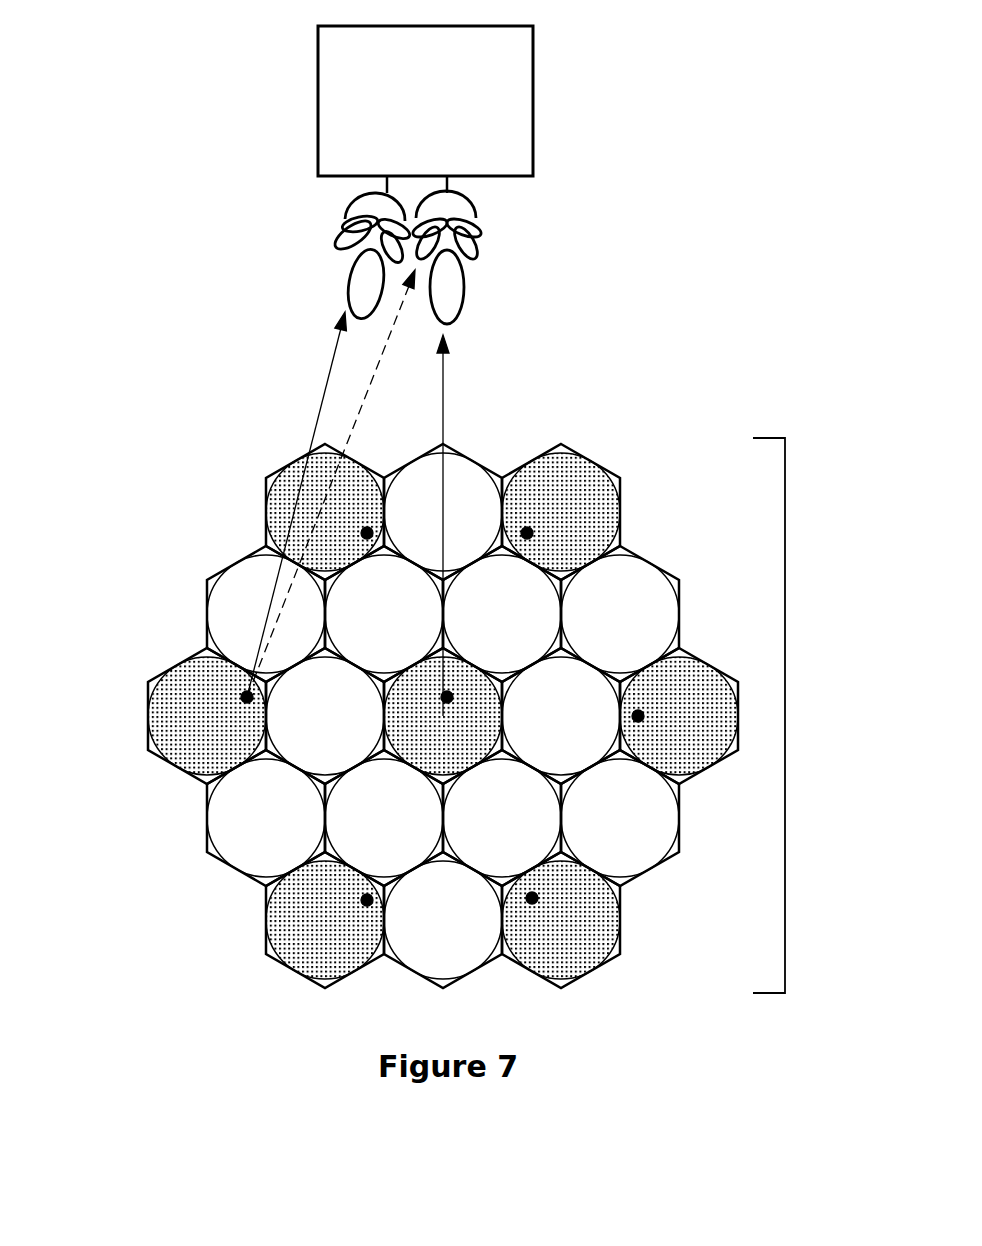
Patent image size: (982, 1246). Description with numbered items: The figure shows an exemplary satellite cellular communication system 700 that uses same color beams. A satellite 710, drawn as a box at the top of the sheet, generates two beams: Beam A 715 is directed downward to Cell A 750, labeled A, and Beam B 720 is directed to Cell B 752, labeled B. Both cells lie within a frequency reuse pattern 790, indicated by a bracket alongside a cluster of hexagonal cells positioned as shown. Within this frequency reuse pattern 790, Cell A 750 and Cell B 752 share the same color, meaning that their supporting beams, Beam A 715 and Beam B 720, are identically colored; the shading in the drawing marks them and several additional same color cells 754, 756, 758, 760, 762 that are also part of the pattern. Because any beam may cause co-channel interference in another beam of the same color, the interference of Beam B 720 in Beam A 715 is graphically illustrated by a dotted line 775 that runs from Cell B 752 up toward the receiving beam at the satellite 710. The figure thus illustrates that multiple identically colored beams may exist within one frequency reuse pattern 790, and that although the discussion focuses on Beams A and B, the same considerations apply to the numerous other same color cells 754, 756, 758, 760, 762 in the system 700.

The satellite cellular communication system 700 is at (98, 932).
The satellite 710 is at (318, 70).
The Beam A 715 is at (480, 247).
The Beam B 720 is at (337, 240).
The Cell A 750 is at (417, 770).
The Cell B 752 is at (185, 660).
The same color cell 754 is at (270, 928).
The same color cell 756 is at (625, 920).
The same color cell 758 is at (713, 763).
The same color cell 760 is at (623, 475).
The same color cell 762 is at (267, 480).
The dotted line 775 is at (382, 355).
The frequency reuse pattern 790 is at (785, 690).